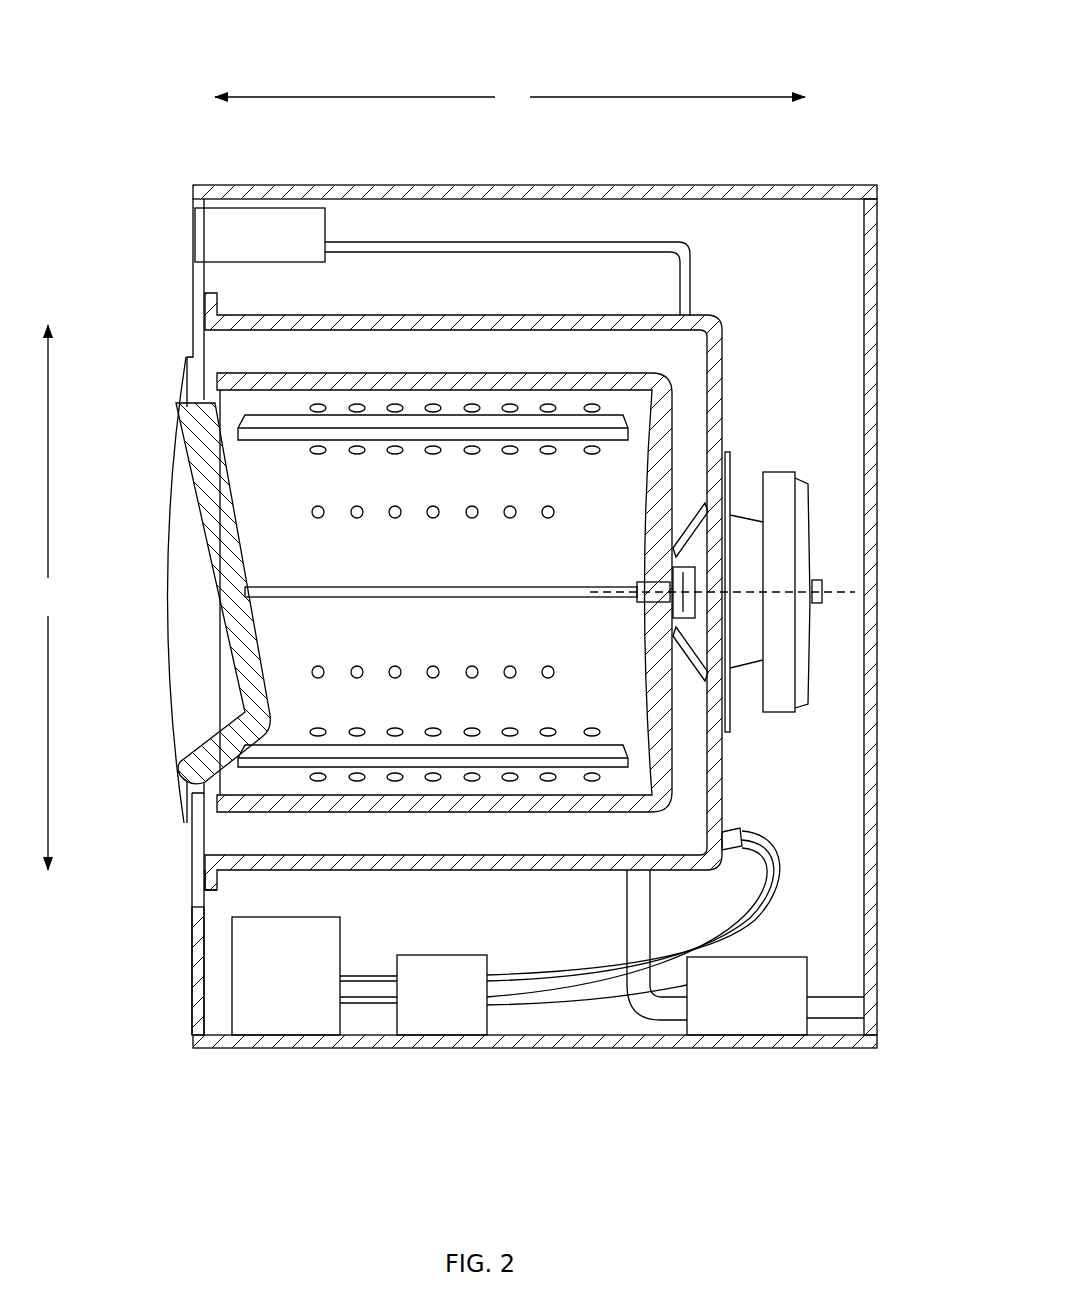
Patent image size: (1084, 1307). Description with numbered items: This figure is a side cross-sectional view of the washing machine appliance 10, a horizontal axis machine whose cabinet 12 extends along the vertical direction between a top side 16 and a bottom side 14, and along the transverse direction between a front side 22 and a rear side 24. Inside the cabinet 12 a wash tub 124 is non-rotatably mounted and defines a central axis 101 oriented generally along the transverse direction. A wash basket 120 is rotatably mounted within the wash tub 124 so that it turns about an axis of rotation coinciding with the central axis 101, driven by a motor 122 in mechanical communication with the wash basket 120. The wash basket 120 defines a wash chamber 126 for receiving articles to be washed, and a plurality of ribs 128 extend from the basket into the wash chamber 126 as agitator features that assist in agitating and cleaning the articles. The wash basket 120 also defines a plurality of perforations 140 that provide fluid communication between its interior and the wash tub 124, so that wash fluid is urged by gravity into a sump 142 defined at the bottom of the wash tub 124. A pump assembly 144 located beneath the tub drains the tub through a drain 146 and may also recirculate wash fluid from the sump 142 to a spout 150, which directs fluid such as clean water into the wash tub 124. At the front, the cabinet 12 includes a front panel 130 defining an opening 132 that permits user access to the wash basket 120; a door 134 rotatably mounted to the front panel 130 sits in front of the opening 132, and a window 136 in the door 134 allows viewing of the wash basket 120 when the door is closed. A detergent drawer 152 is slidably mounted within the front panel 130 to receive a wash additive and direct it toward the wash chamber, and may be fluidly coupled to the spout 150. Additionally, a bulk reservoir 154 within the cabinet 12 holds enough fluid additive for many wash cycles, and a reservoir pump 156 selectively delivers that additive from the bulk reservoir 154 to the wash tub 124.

The washing machine appliance 10 is at (158, 72).
The cabinet 12 is at (878, 695).
The bottom side 14 is at (893, 1030).
The top side 16 is at (884, 183).
The front side 22 is at (183, 180).
The rear side 24 is at (880, 376).
The central axis 101 is at (838, 594).
The wash basket 120 is at (428, 382).
The motor 122 is at (783, 521).
The wash tub 124 is at (722, 405).
The wash chamber 126 is at (278, 546).
The ribs 128 is at (322, 590).
The front panel 130 is at (196, 876).
The opening 132 is at (210, 404).
The door 134 is at (172, 640).
The window 136 is at (192, 714).
The perforations 140 is at (548, 520).
The sump 142 is at (684, 830).
The pump assembly 144 is at (738, 1025).
The drain 146 is at (636, 870).
The spout 150 is at (692, 288).
The detergent drawer 152 is at (284, 226).
The bulk reservoir 154 is at (280, 1022).
The reservoir pump 156 is at (445, 1022).